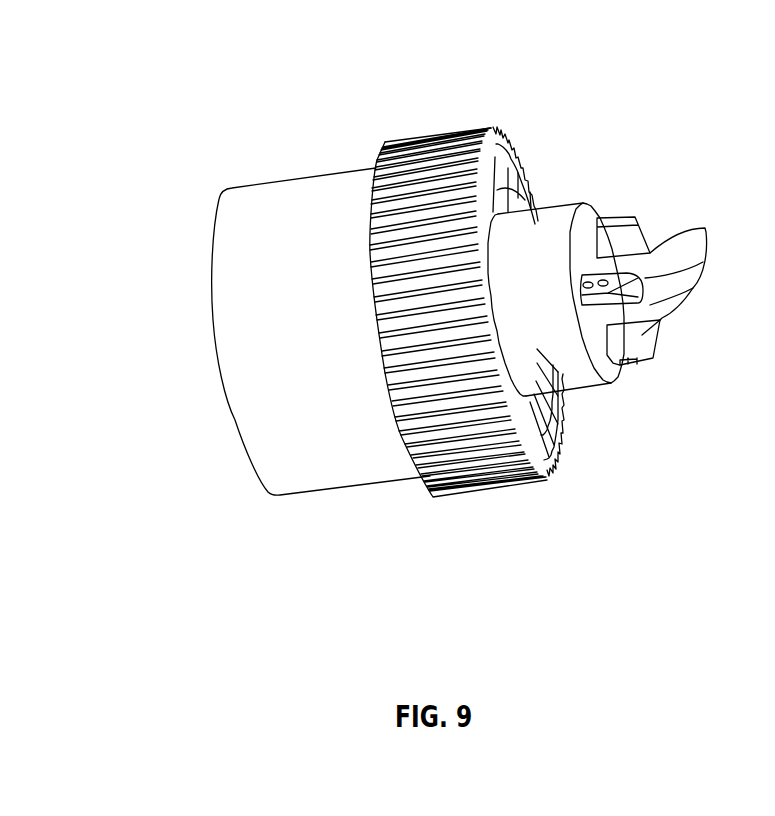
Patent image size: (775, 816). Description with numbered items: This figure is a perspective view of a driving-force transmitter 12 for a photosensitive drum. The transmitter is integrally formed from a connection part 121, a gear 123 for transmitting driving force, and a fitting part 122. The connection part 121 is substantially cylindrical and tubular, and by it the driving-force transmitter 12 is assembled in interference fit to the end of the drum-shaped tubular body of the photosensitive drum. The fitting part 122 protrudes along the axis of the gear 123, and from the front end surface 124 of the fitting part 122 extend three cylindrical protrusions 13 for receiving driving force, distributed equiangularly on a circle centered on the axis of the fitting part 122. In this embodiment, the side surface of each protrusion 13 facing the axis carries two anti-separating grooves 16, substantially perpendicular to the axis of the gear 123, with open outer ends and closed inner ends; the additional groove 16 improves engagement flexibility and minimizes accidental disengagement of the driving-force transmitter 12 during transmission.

The driving-force transmitter 12 is at (375, 287).
The connection part 121 is at (278, 311).
The fitting part 122 is at (556, 240).
The gear 123 is at (467, 252).
The front end surface 124 is at (559, 446).
The cylindrical protrusion 13 is at (659, 287).
The anti-separating groove 16 is at (639, 287).